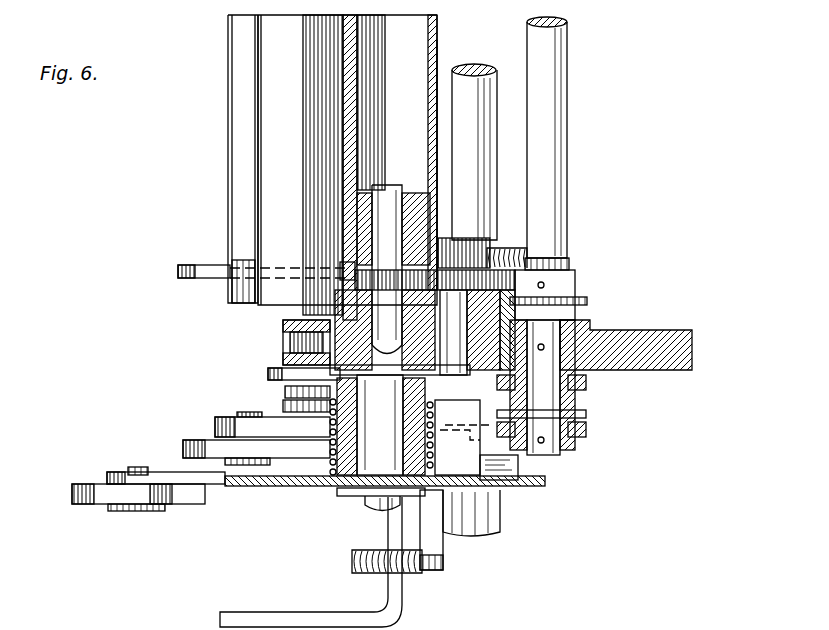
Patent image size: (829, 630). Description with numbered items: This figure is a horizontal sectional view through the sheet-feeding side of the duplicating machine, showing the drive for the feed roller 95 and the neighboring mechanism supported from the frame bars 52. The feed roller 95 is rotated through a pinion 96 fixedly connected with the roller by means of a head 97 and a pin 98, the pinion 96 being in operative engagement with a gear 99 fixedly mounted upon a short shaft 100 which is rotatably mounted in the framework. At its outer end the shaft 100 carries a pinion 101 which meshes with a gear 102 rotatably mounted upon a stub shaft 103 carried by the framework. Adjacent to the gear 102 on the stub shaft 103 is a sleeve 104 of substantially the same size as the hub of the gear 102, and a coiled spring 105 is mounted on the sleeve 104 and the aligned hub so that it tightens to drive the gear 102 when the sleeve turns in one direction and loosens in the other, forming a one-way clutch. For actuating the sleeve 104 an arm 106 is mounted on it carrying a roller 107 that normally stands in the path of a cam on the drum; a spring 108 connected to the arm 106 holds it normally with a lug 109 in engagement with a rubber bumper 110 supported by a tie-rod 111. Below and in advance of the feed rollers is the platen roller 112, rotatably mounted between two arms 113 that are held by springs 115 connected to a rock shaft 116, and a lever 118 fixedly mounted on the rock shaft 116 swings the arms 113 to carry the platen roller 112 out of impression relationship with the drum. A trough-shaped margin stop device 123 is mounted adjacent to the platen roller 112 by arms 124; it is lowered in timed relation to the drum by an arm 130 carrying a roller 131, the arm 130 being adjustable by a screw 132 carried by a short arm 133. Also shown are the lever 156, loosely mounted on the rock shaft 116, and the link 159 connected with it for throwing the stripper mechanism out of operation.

The frame bars 52 is at (653, 334).
The feed roller 95 is at (437, 29).
The pinion 96 is at (352, 268).
The head 97 is at (362, 205).
The pin 98 is at (385, 183).
The gear 99 is at (548, 280).
The short shaft 100 is at (400, 372).
The pinion 101 is at (530, 402).
The gear 102 is at (275, 368).
The stub shaft 103 is at (372, 497).
The sleeve 104 is at (352, 486).
The coiled spring 105 is at (315, 470).
The arm 106 is at (262, 486).
The roller 107 is at (100, 498).
The spring 108 is at (366, 573).
The lug 109 is at (518, 465).
The bumper 110 is at (560, 412).
The tie-rod 111 is at (497, 72).
The platen roller 112 is at (275, 113).
The arms 113 is at (268, 370).
The springs 115 is at (515, 250).
The rock shaft 116 is at (548, 165).
The lever 118 is at (588, 384).
The margin stop device 123 is at (238, 137).
The arms 124 is at (200, 252).
The arm 130 is at (214, 420).
The roller 131 is at (192, 440).
The screw 132 is at (288, 390).
The short arm 133 is at (285, 406).
The lever 156 is at (588, 432).
The link 159 is at (372, 608).